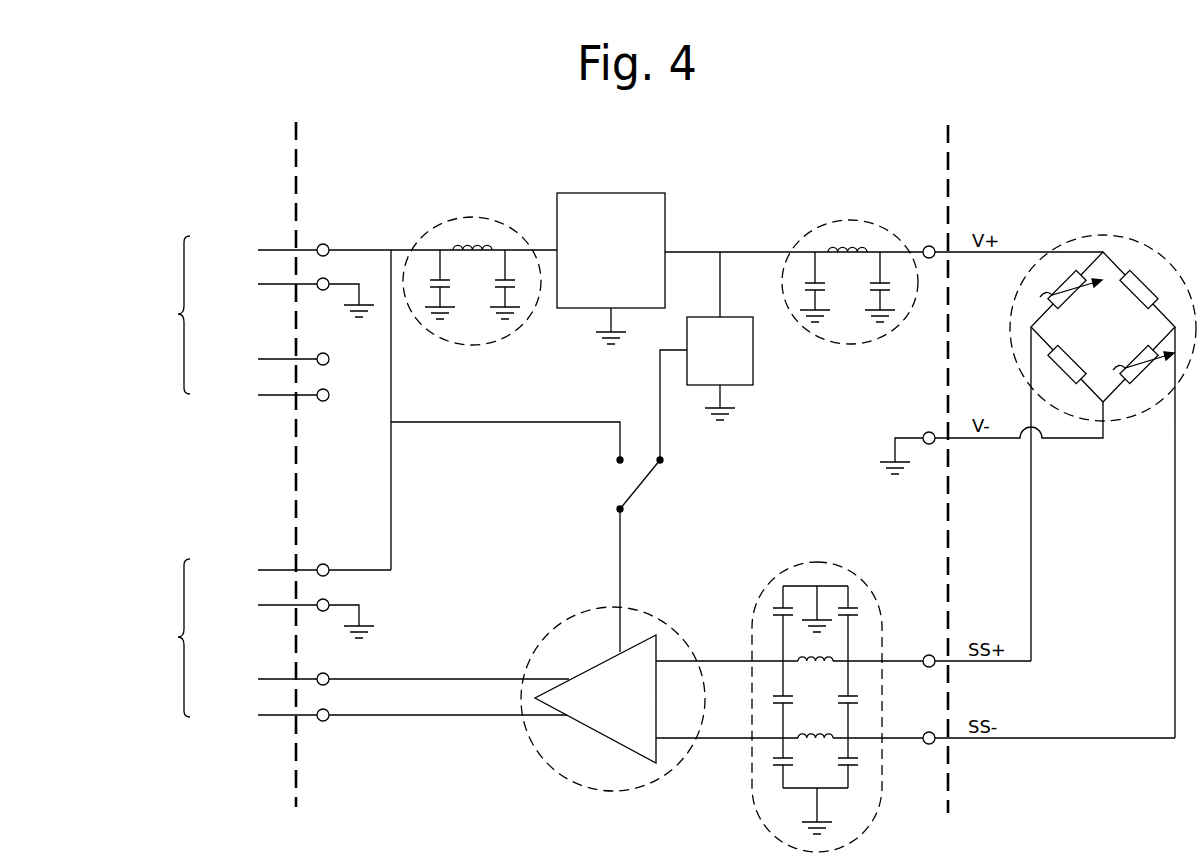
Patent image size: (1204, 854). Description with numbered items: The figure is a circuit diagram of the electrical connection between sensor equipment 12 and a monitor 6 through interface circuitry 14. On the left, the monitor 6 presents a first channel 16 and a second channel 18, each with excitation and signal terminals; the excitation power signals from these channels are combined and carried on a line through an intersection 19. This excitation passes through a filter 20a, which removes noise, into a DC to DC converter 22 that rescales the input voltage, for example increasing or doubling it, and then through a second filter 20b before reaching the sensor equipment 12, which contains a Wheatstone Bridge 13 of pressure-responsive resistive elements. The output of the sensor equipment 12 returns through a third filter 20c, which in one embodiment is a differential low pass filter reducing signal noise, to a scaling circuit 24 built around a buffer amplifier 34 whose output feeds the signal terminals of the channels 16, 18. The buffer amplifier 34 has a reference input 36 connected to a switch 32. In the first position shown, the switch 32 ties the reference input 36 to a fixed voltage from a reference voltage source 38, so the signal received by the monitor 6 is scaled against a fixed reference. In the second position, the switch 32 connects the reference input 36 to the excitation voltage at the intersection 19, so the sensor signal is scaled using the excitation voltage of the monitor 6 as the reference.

The monitor 6 is at (206, 185).
The sensor equipment 12 is at (1041, 156).
The Wheatstone Bridge 13 is at (1104, 235).
The circuitry 14 is at (492, 788).
The first channel 16 is at (358, 642).
The second channel 18 is at (261, 320).
The intersection 19 is at (392, 248).
The filter 20a is at (474, 217).
The filter 20b is at (851, 218).
The third filter 20c is at (817, 560).
The DC to DC converter 22 is at (611, 193).
The scaling circuit 24 is at (561, 624).
The switch 32 is at (595, 474).
The buffer amplifier 34 is at (630, 708).
The reference input 36 is at (618, 547).
The reference voltage source 38 is at (742, 317).